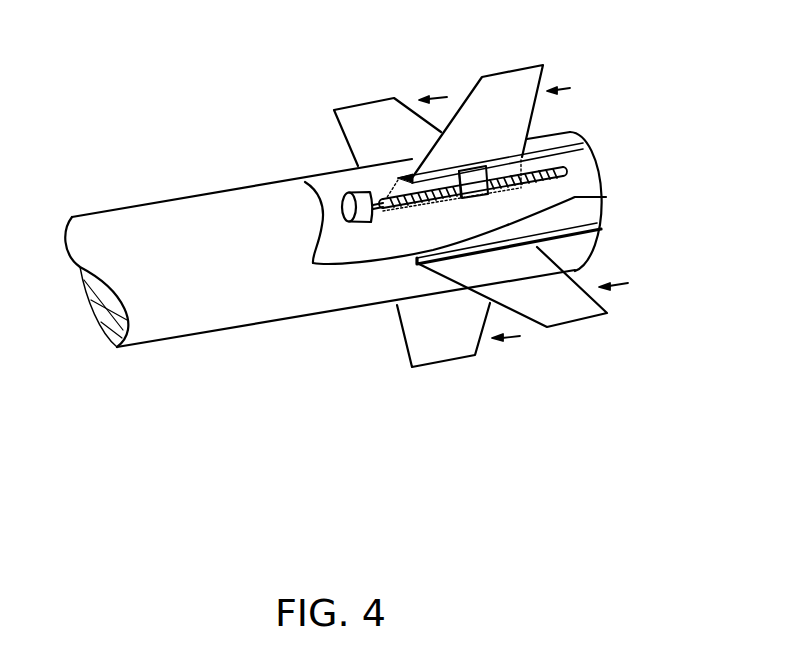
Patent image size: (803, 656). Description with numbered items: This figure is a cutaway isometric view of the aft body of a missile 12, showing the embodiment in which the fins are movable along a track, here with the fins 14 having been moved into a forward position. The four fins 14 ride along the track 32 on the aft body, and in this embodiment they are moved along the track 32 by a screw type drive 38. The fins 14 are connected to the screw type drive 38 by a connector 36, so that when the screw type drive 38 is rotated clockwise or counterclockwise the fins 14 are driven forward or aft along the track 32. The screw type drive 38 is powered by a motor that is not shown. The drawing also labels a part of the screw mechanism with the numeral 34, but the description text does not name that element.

The tubular housing 12 is at (173, 232).
The flap 14 is at (520, 93).
The guide rail 32 is at (562, 148).
The lead screw 34 is at (563, 172).
The slot 36 is at (604, 228).
The knob 38 is at (342, 198).